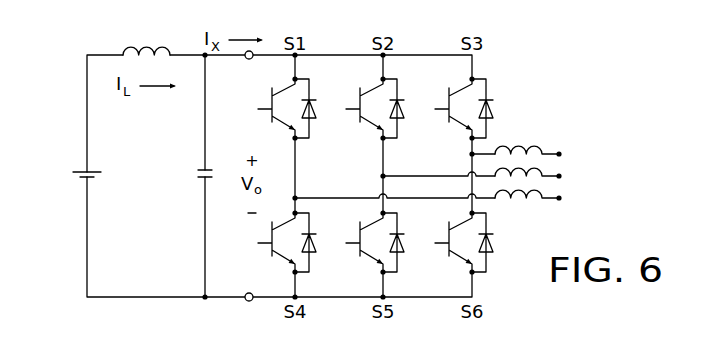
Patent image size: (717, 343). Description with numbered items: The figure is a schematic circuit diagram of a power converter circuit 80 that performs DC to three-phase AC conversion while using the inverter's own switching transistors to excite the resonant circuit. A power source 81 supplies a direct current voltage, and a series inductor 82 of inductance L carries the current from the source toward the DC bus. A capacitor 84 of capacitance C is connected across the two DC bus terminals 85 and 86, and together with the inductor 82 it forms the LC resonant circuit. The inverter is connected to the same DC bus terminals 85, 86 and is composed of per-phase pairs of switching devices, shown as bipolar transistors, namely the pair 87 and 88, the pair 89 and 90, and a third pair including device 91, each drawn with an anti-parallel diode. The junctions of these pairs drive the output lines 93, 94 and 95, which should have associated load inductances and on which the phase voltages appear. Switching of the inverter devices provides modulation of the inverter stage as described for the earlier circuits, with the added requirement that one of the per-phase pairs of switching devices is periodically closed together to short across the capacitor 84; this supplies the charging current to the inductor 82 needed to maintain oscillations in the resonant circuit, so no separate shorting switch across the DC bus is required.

The power converter circuit 80 is at (84, 84).
The power source 81 is at (77, 169).
The series inductor 82 is at (130, 47).
The capacitor 84 is at (200, 168).
The DC bus terminal 85 is at (248, 61).
The DC bus terminal 86 is at (247, 303).
The switching device 87 is at (271, 127).
The switching device 88 is at (271, 261).
The switching device 89 is at (359, 127).
The switching device 90 is at (359, 261).
The switching device 91 is at (448, 127).
The output line 93 is at (509, 147).
The output line 94 is at (542, 170).
The output line 95 is at (533, 194).